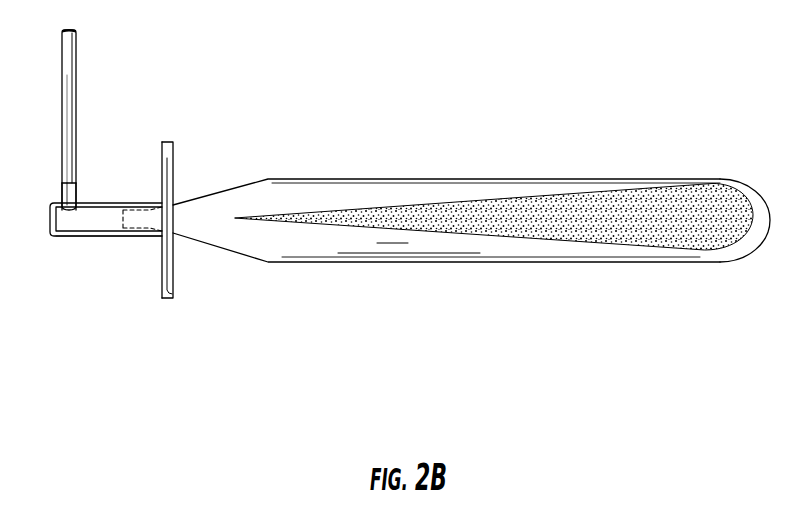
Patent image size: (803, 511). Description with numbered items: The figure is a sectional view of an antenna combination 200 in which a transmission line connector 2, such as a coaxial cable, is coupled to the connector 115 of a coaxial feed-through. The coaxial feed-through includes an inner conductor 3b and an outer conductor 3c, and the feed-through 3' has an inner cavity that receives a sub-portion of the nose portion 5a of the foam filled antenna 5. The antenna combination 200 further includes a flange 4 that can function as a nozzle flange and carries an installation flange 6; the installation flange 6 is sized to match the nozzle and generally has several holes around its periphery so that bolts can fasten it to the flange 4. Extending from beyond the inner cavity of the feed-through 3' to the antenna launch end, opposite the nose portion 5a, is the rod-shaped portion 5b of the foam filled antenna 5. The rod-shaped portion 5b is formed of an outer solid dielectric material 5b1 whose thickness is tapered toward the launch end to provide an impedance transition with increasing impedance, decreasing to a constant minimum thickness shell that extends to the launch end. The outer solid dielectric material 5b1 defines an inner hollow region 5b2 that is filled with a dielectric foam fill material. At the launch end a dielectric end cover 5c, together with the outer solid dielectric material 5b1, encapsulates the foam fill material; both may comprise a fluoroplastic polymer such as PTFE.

The antenna combination 200 is at (640, 108).
The transmission line connector 2 is at (72, 53).
The connector 115 is at (68, 197).
The inner conductor 3b is at (73, 223).
The feed-through 3' is at (109, 273).
The outer conductor 3c is at (85, 236).
The nose portion 5a is at (137, 222).
The installation flange 6 is at (162, 157).
The flange 4 is at (172, 165).
The foam filled antenna 5 is at (474, 307).
The rod-shaped portion 5b is at (494, 290).
The outer solid dielectric material 5b1 is at (457, 338).
The inner hollow region 5b2 is at (413, 218).
The dielectric end cover 5c is at (766, 224).